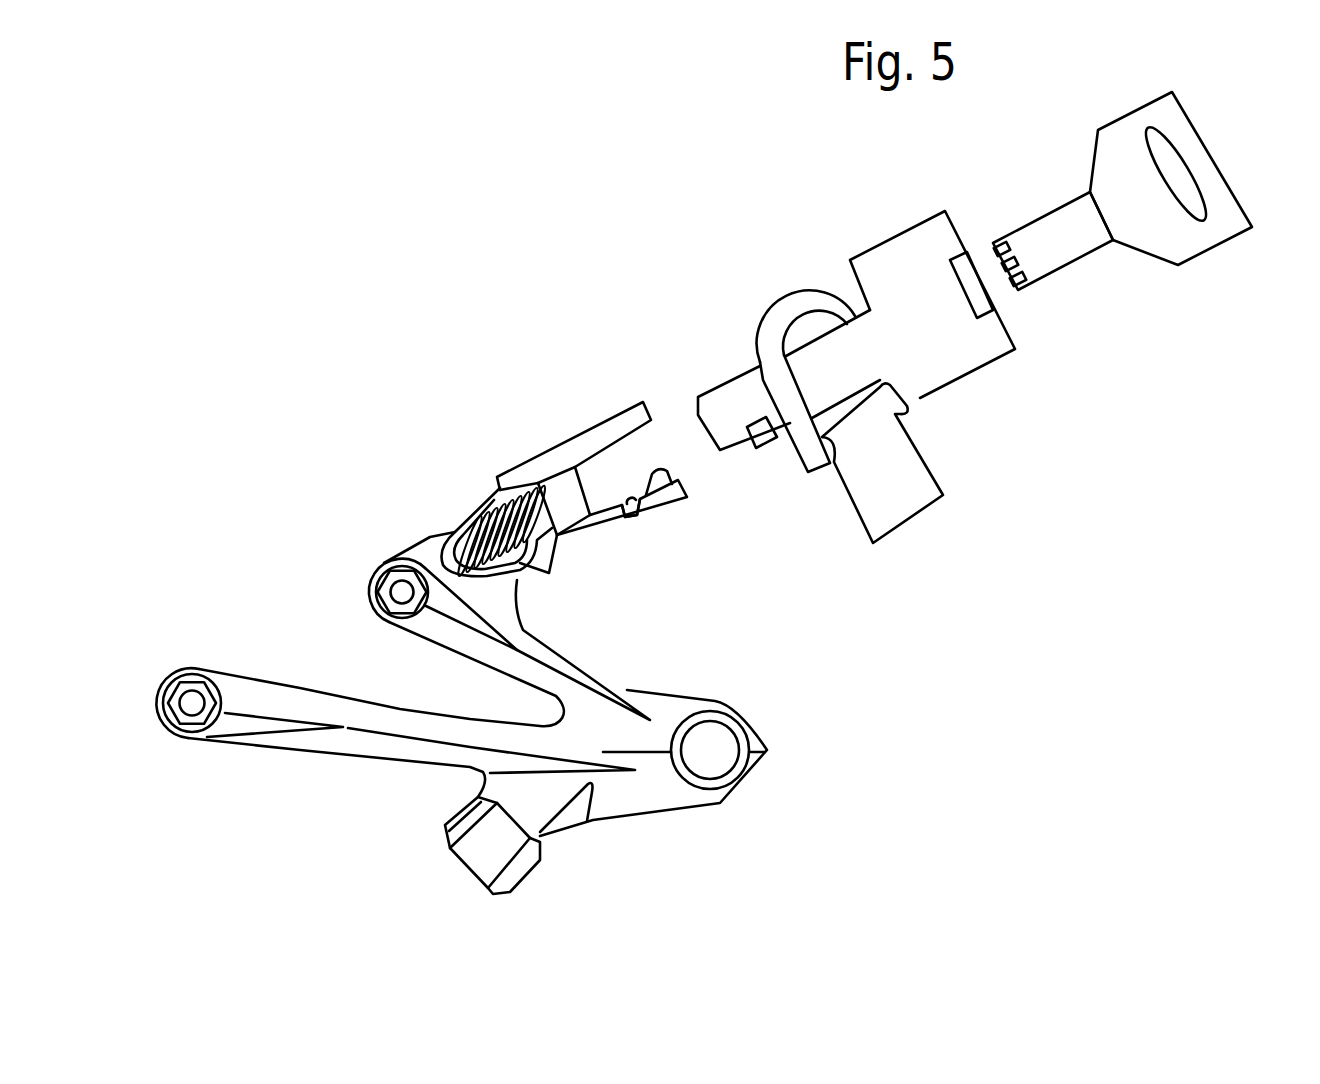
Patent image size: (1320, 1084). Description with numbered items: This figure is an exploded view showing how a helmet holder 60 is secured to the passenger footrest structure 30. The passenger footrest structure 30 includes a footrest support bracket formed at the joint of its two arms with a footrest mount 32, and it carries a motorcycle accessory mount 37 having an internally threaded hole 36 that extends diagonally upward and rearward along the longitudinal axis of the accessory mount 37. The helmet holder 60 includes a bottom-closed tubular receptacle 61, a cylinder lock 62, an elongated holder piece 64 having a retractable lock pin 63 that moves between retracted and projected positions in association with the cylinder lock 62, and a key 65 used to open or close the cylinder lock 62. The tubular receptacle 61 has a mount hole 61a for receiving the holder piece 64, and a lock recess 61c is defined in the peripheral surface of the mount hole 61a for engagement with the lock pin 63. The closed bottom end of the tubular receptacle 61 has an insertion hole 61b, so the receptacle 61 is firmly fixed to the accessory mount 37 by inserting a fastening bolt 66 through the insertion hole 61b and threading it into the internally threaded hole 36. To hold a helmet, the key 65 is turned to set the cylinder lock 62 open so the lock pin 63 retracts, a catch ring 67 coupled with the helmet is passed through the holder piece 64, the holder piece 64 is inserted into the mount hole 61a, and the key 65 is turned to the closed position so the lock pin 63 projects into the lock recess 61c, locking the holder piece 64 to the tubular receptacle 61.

The passenger footrest structure 30 is at (461, 704).
The footrest mount 32 is at (480, 858).
The internally threaded hole 36 is at (462, 540).
The motorcycle accessory mount 37 is at (507, 533).
The helmet holder 60 is at (874, 369).
The tubular receptacle 61 is at (617, 427).
The mount hole 61a is at (677, 497).
The insertion hole 61b is at (557, 537).
The lock recess 61c is at (640, 507).
The cylinder lock 62 is at (900, 245).
The lock pin 63 is at (765, 450).
The elongated holder piece 64 is at (720, 400).
The key 65 is at (1035, 240).
The fastening bolt 66 is at (558, 487).
The catch ring 67 is at (788, 326).